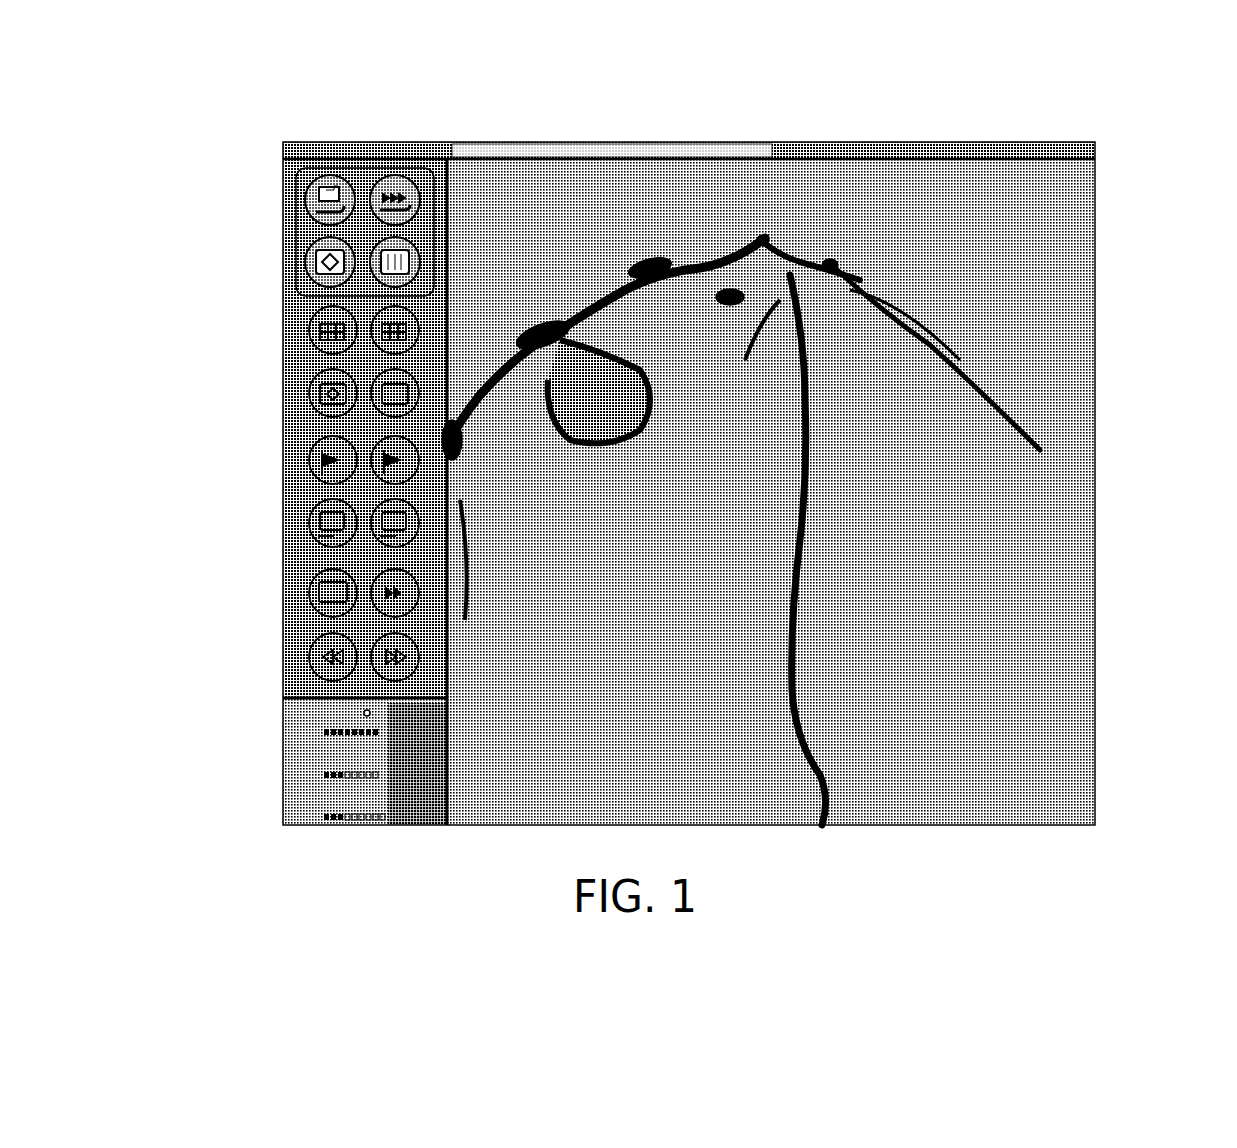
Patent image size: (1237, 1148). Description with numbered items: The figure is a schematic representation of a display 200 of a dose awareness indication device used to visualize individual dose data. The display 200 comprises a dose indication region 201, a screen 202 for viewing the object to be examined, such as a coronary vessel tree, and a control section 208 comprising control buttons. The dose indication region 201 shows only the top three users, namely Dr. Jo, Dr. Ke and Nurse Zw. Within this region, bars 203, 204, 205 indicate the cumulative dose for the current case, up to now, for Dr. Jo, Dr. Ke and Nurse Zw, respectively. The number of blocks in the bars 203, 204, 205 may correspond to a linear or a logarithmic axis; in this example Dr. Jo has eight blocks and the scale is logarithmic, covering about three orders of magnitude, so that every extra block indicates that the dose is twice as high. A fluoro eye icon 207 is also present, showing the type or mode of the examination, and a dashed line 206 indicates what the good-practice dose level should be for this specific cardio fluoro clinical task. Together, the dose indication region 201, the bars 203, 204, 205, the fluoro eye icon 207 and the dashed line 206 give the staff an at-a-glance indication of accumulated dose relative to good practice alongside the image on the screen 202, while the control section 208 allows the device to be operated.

The display 200 is at (1122, 208).
The dose indication region 201 is at (412, 826).
The fluoroscopic image area 202 is at (1095, 414).
The bar 203 is at (333, 723).
The bar 204 is at (335, 770).
The bar 205 is at (335, 826).
The dashed line 206 is at (373, 800).
The fluoro eye icon 207 is at (363, 713).
The control section 208 is at (283, 217).